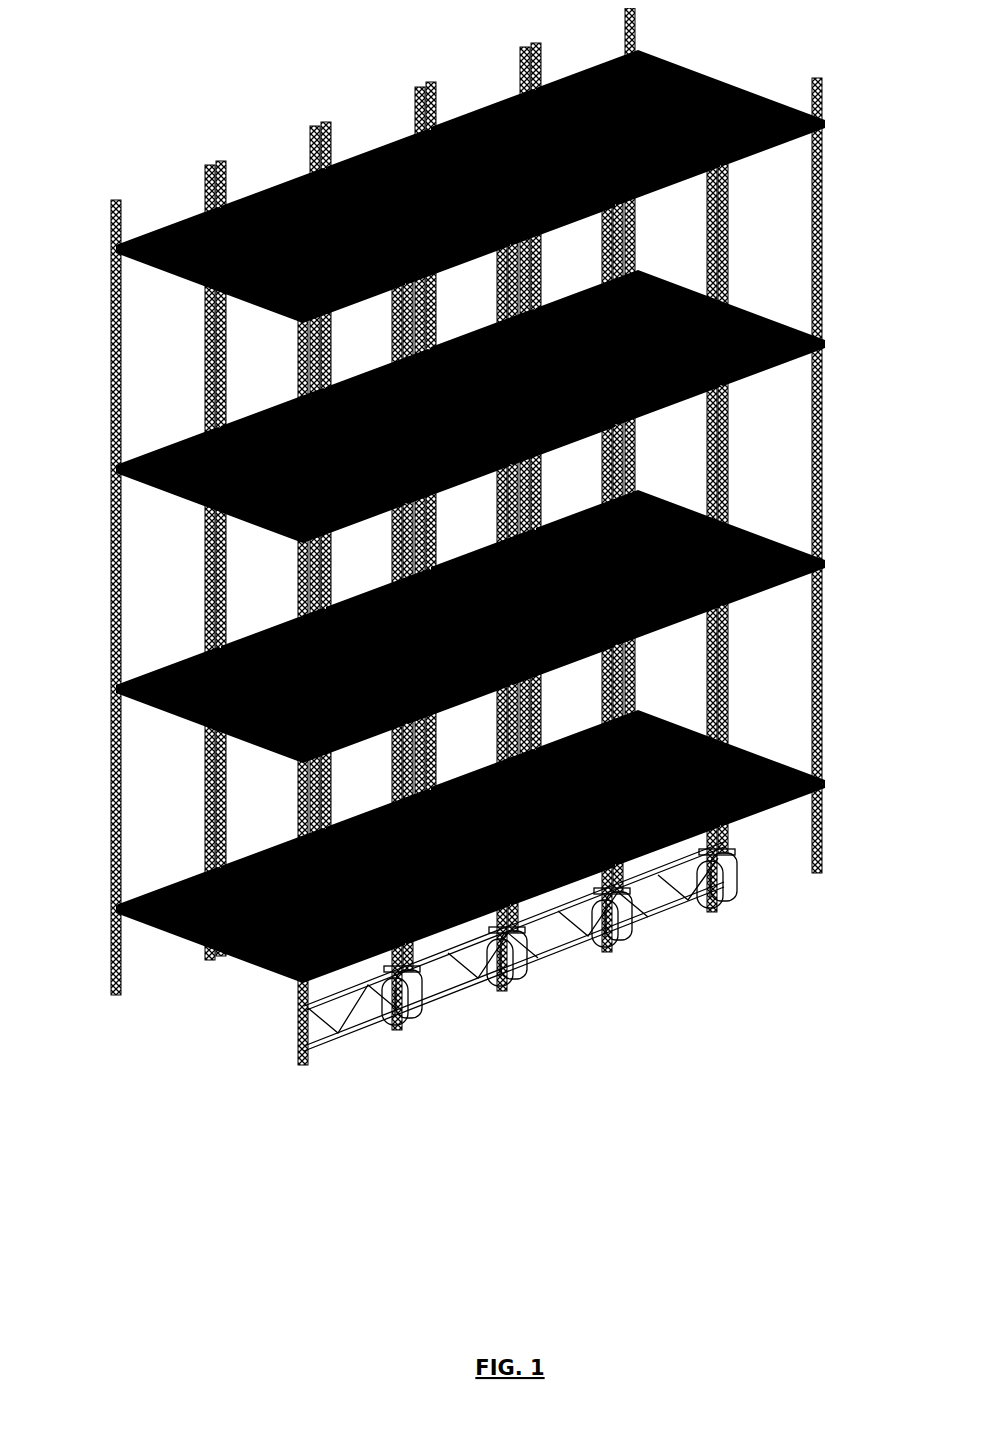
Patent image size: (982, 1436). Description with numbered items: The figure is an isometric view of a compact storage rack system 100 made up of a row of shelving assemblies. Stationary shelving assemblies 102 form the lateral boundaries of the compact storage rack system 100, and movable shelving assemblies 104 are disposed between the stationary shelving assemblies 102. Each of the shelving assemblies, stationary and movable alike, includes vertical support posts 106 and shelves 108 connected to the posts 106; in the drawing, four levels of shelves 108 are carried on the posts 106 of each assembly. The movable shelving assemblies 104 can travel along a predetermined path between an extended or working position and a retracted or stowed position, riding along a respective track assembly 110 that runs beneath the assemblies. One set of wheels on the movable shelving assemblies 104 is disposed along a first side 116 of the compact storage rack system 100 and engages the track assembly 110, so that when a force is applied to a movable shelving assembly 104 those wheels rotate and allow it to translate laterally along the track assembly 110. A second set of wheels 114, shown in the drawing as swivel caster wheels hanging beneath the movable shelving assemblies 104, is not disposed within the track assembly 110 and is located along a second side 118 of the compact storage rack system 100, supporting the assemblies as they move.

The compact storage rack system 100 is at (262, 168).
The stationary shelving assemblies 102 is at (177, 186).
The movable shelving assemblies 104 is at (365, 116).
The vertical support posts 106 is at (88, 597).
The shelves 108 is at (260, 583).
The track assembly 110 is at (355, 1008).
The second set of wheels 114 is at (410, 1012).
The first side 116 is at (636, 108).
The second side 118 is at (548, 950).